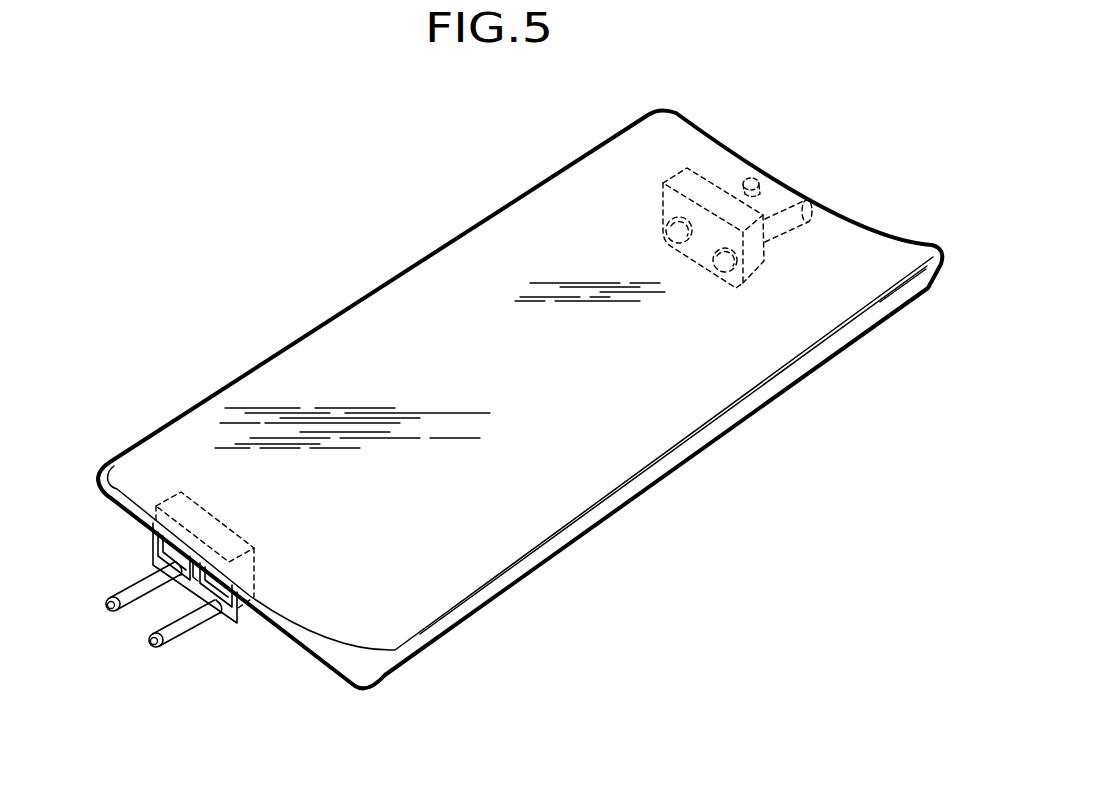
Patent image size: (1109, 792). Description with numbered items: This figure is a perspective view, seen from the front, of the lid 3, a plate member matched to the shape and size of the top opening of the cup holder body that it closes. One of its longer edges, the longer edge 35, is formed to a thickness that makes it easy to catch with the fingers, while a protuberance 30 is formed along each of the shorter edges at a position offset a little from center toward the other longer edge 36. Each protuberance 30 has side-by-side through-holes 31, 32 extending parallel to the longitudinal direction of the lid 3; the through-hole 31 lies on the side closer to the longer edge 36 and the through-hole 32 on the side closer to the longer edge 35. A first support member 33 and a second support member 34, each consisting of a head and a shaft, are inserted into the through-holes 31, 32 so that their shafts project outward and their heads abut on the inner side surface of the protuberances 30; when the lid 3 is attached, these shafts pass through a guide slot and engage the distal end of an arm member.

The lid 3 is at (547, 470).
The protuberance 30 is at (662, 197).
The through-hole 31 is at (150, 575).
The through-hole 32 is at (213, 613).
The first support member 33 is at (741, 187).
The second support member 34 is at (802, 208).
The longer edge 35 is at (710, 443).
The longer edge 36 is at (388, 283).